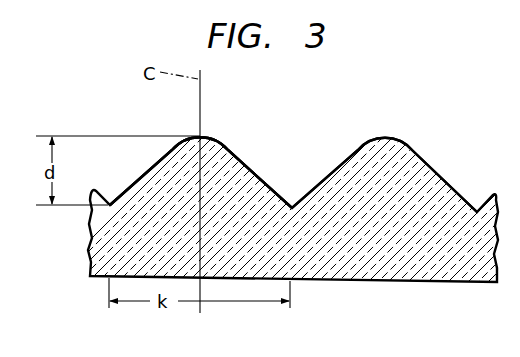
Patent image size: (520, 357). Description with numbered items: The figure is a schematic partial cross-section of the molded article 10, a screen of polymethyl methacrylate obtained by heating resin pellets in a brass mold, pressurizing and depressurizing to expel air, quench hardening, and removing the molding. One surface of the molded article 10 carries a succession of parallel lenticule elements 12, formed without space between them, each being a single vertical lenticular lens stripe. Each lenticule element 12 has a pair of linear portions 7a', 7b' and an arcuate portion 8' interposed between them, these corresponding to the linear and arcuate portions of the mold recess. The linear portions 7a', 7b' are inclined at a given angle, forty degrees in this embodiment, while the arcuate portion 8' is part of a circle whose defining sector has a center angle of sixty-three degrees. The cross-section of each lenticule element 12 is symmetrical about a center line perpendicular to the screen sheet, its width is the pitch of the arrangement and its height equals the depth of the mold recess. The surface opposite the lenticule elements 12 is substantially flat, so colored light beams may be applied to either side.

The molded article 10 is at (312, 288).
The lenticule element 12 is at (224, 112).
The arcuate portion 8' is at (199, 124).
The linear portion 7a' is at (134, 177).
The linear portion 7b' is at (266, 179).